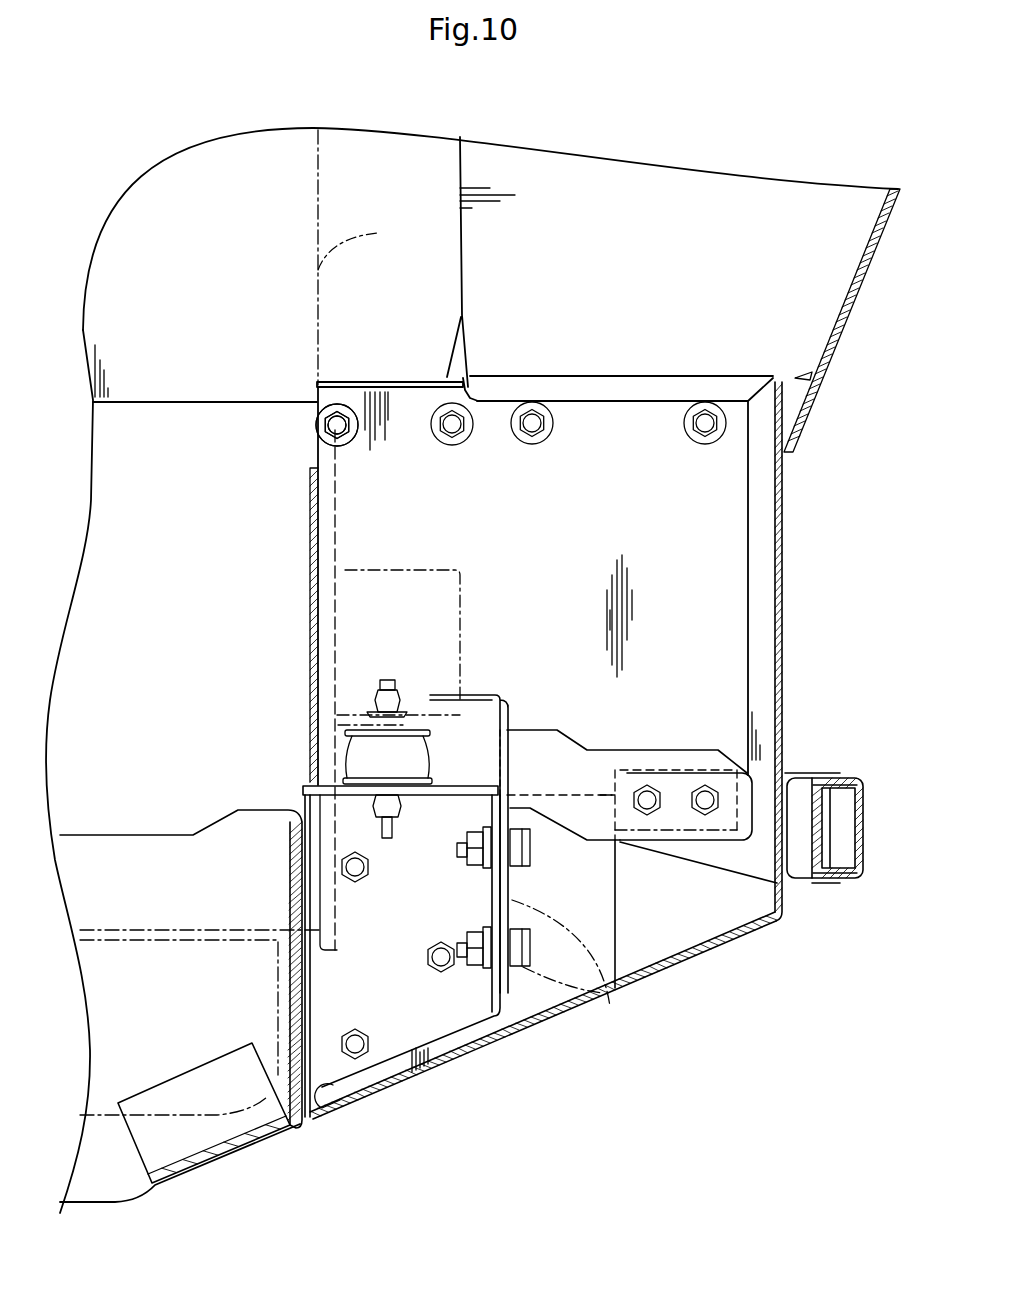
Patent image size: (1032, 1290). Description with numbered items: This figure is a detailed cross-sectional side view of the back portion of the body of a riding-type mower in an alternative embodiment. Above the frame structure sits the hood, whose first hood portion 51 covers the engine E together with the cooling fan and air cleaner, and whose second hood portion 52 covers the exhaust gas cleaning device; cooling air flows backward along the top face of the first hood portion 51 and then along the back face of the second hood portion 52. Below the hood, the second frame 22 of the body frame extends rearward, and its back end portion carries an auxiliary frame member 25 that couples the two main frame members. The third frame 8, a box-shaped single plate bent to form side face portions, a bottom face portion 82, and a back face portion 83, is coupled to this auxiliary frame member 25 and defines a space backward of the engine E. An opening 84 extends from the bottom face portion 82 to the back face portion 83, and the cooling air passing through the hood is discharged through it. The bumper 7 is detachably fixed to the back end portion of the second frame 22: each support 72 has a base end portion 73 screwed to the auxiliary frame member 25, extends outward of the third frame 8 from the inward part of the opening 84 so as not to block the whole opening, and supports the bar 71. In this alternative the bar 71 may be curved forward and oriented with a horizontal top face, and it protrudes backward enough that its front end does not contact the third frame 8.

The first hood portion 51 is at (347, 163).
The second hood portion 52 is at (652, 198).
The engine E is at (356, 244).
The third frame 8 is at (790, 492).
The back face portion 83 is at (783, 582).
The opening 84 is at (629, 921).
The bottom face portion 82 is at (445, 1067).
The bumper 7 is at (845, 774).
The bar 71 is at (863, 850).
The support 72 is at (718, 855).
The base end portion 73 is at (507, 883).
The auxiliary frame member 25 is at (390, 1025).
The second frame 22 is at (107, 847).